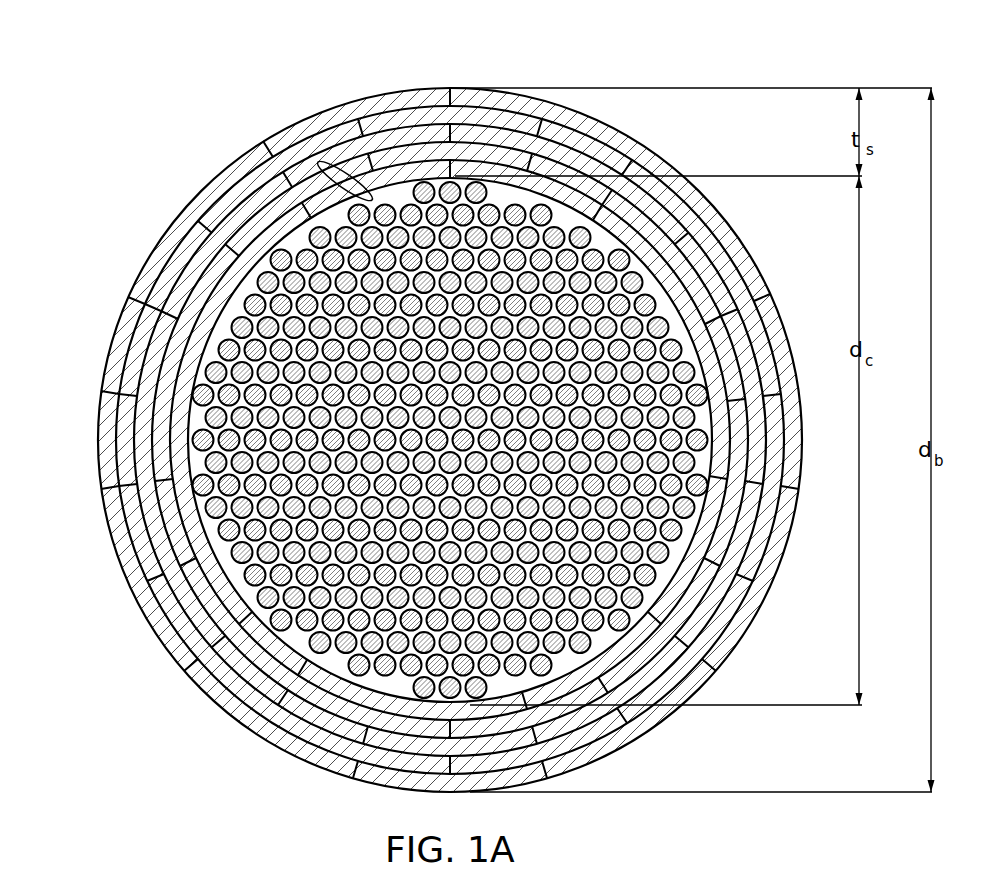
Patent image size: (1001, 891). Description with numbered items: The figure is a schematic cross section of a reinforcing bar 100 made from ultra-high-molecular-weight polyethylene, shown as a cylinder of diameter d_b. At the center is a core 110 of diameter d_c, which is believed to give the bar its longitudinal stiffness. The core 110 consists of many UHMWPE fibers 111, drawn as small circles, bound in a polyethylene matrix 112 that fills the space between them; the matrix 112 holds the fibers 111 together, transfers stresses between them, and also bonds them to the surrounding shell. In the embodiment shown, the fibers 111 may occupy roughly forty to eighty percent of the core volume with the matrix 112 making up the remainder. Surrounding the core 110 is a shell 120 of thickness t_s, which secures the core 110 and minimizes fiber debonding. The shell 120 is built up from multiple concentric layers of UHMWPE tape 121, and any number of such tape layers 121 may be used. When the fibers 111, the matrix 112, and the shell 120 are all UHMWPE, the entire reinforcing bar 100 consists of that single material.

The reinforcing bar 100 is at (110, 116).
The core 110 is at (371, 281).
The UHMWPE fibers 111 is at (632, 265).
The polyethylene matrix 112 is at (707, 470).
The shell 120 is at (255, 677).
The UHMWPE tape 121 is at (485, 126).